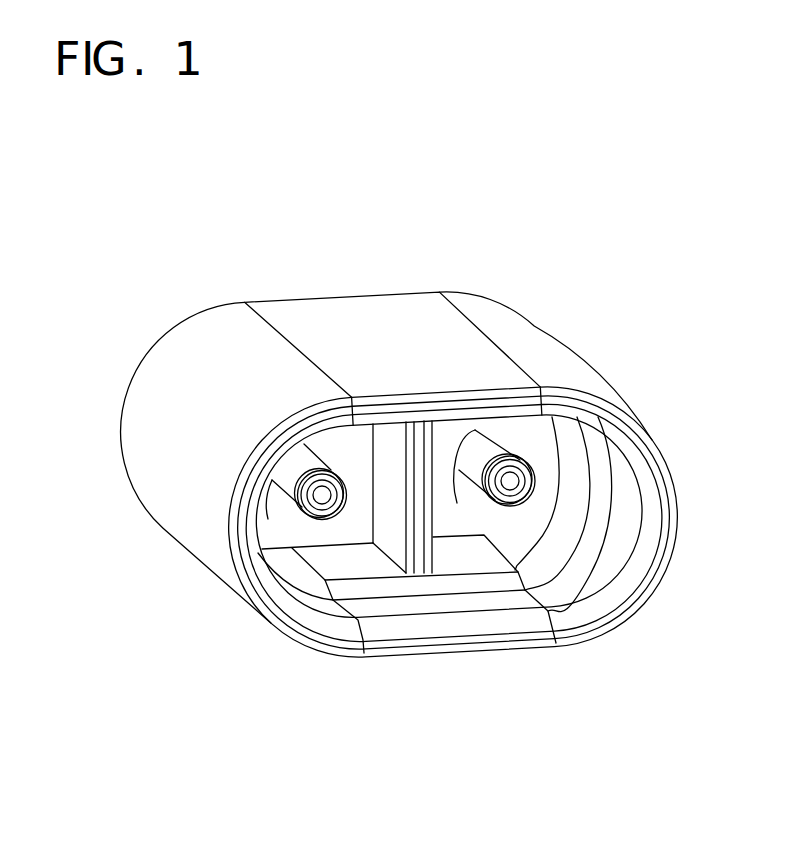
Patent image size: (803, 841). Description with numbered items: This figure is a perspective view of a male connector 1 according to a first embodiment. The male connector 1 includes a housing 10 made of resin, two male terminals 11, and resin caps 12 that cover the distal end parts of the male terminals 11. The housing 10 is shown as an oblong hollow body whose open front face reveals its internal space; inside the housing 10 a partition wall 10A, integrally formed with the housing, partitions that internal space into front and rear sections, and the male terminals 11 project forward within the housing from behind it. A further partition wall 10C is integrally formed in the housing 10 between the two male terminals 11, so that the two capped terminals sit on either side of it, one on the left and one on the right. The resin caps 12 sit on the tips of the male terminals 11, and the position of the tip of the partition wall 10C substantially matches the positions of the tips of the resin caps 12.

The male connector 1 is at (427, 256).
The housing 10 is at (553, 363).
The partition wall 10A is at (543, 443).
The partition wall 10C is at (396, 541).
The male terminals 11 is at (479, 464).
The resin caps 12 is at (327, 499).